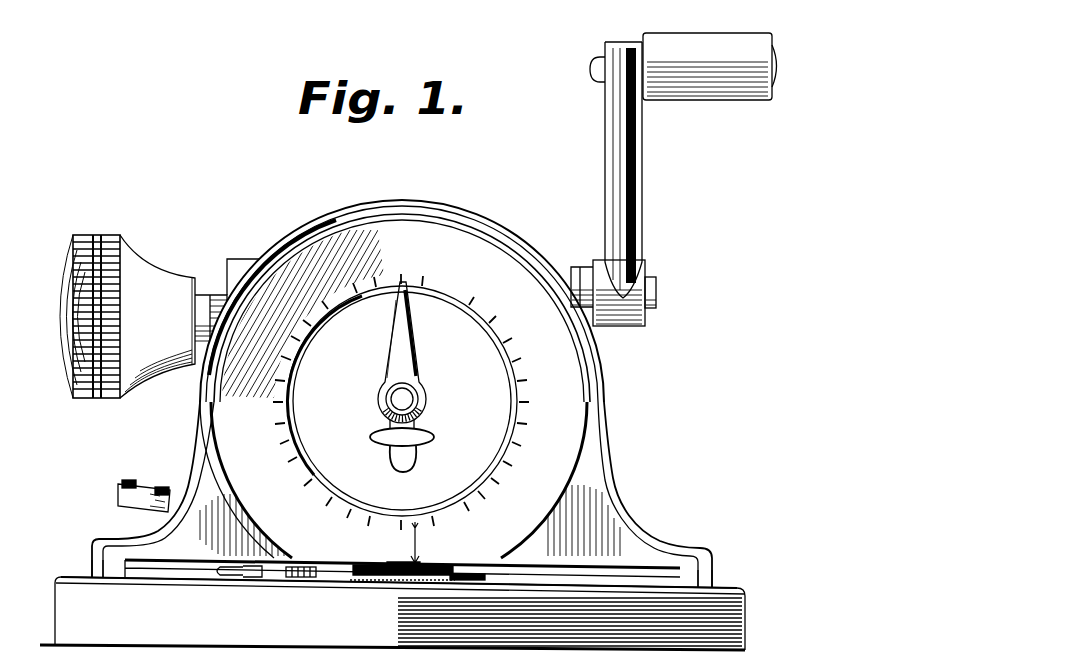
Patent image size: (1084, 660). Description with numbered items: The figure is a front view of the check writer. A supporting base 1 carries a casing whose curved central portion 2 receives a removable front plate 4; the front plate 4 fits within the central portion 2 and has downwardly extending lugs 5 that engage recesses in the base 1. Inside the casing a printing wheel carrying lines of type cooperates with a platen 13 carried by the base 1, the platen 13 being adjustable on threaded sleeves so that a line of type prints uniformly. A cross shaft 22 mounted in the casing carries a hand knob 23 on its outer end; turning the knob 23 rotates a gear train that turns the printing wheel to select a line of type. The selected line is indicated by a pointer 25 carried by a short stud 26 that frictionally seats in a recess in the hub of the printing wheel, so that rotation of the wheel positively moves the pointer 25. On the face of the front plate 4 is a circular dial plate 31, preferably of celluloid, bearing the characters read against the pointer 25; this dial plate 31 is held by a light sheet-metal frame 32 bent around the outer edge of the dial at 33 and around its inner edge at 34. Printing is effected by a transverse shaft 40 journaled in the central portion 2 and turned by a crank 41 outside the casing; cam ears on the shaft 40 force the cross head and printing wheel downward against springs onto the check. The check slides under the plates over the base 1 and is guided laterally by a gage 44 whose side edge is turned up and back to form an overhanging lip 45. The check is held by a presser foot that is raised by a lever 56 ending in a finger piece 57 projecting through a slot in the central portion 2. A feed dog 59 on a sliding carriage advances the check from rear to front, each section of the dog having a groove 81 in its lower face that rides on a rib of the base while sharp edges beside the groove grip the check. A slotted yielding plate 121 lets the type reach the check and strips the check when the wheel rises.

The supporting base 1 is at (745, 607).
The curved central portion 2 is at (607, 397).
The removable front plate 4 is at (587, 513).
The downwardly extending lugs 5 is at (688, 578).
The platen 13 is at (401, 586).
The cross shaft 22 is at (203, 312).
The hand knob 23 is at (127, 316).
The pointer 25 is at (404, 350).
The short stud 26 is at (420, 398).
The circular dial plate 31 is at (498, 262).
The frame 32 is at (222, 384).
The outer bent edge of frame 33 is at (222, 434).
The inner bent edge of frame 34 is at (530, 422).
The transverse shaft 40 is at (583, 290).
The crank 41 is at (634, 207).
The gage 44 is at (236, 578).
The upturned lip portion 45 is at (212, 575).
The lever 56 is at (120, 500).
The finger piece 57 is at (127, 480).
The feed dog 59 is at (270, 558).
The groove 81 is at (294, 572).
The yielding plate 121 is at (457, 585).